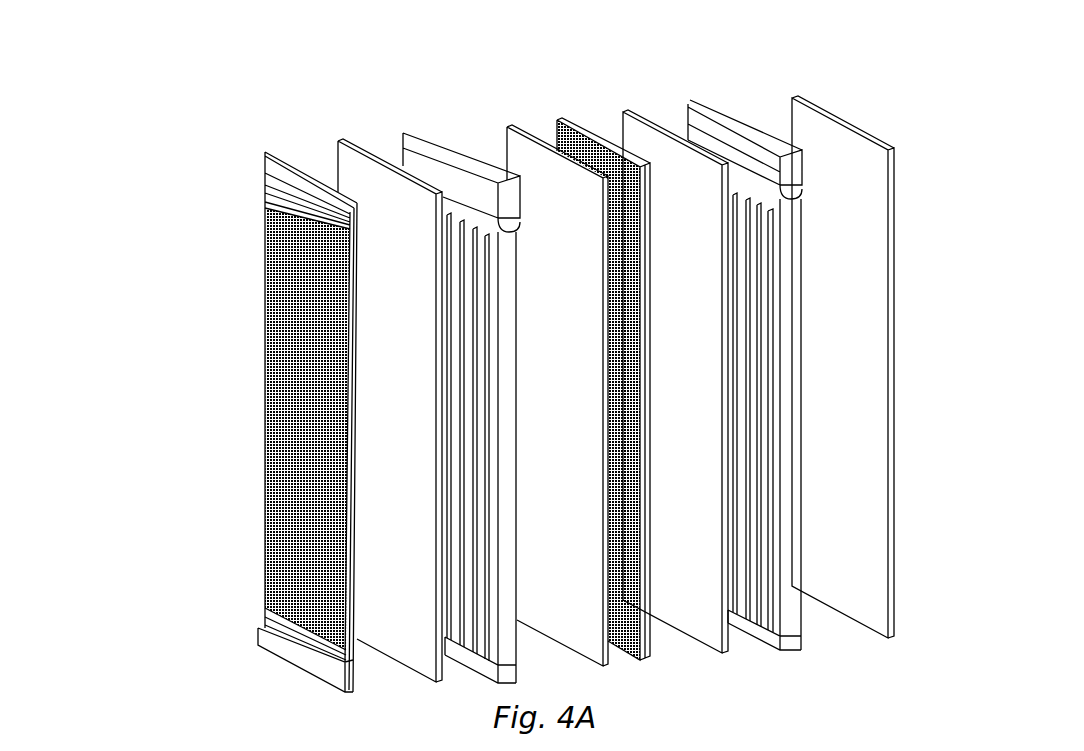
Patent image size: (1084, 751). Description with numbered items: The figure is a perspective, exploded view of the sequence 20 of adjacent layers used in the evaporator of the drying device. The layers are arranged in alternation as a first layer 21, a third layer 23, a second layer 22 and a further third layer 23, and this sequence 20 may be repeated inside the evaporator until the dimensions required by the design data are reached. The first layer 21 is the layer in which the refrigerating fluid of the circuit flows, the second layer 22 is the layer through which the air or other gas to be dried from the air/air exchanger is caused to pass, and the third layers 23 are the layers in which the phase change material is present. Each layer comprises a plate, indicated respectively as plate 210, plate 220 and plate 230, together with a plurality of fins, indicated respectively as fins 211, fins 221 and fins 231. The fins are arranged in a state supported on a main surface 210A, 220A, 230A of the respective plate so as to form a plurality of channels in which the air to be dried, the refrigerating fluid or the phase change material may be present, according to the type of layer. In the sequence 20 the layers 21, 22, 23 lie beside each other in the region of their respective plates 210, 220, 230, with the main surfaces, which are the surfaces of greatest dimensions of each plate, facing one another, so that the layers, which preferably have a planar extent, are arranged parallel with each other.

The sequence 20 is at (848, 72).
The first layer 21 is at (222, 395).
The second layer 22 is at (676, 397).
The third layer 23 is at (513, 127).
The plate 210 is at (393, 388).
The main surface 210A is at (386, 450).
The fins 211 is at (292, 371).
The plate 220 is at (683, 558).
The main surface 220A is at (700, 477).
The fins 221 is at (645, 648).
The plate 230 is at (834, 188).
The main surface 230A is at (846, 256).
The fins 231 is at (763, 273).